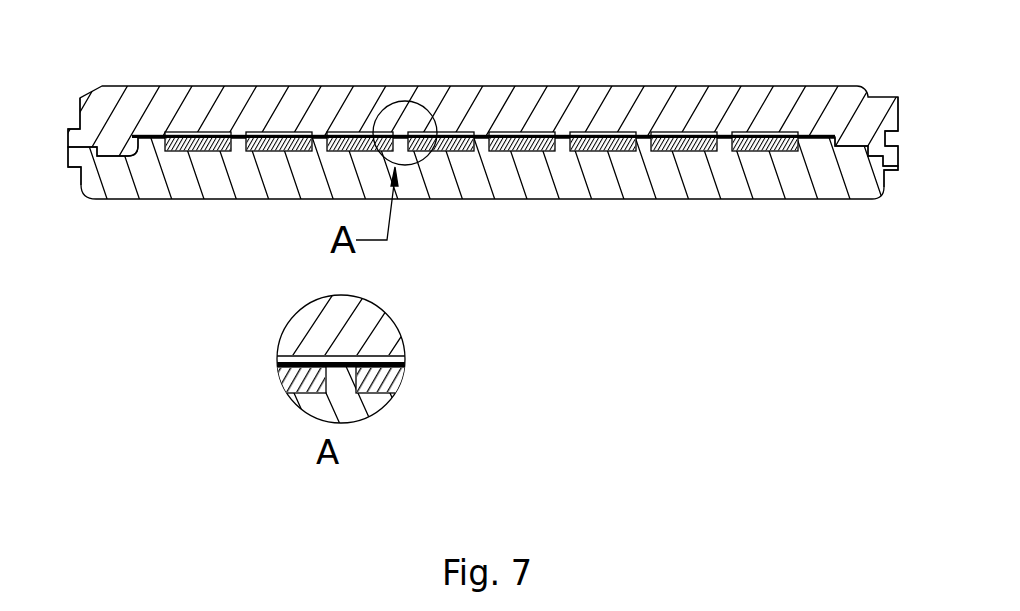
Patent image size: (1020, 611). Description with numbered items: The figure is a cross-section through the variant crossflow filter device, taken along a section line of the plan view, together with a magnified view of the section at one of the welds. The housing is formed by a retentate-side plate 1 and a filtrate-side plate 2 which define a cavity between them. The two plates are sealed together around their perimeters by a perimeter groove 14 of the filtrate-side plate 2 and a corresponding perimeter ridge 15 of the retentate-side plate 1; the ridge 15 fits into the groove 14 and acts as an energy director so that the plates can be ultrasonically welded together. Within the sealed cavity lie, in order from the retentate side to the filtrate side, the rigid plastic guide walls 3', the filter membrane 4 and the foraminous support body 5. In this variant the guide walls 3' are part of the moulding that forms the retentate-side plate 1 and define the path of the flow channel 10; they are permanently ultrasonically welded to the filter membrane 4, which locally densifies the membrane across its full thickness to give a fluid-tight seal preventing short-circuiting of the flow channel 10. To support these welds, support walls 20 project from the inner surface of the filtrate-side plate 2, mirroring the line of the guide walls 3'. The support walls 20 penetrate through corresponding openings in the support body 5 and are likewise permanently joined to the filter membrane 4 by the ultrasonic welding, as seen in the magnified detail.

The retentate-side plate 1 is at (597, 87).
The filtrate-side plate 2 is at (508, 199).
The rigid plastic guide walls 3' is at (328, 191).
The filter membrane 4 is at (829, 132).
The foraminous support body 5 is at (776, 153).
The flow channel 10 is at (200, 135).
The perimeter groove 14 is at (130, 150).
The perimeter ridge 15 is at (868, 162).
The support walls 20 is at (243, 138).